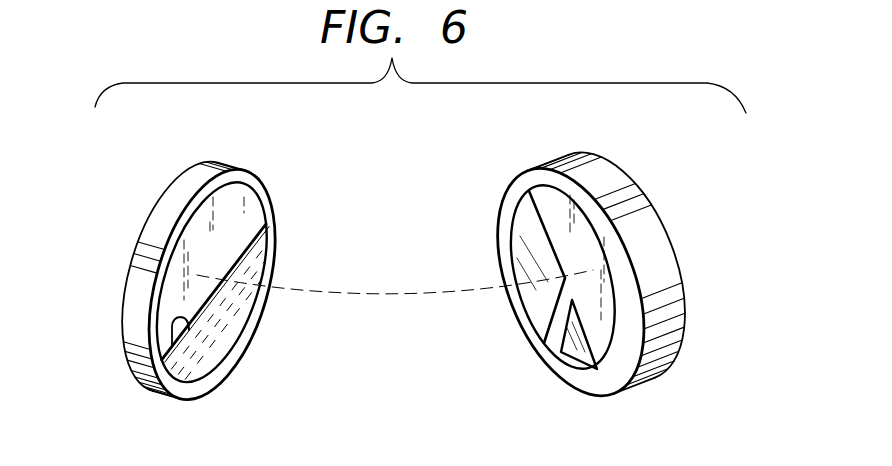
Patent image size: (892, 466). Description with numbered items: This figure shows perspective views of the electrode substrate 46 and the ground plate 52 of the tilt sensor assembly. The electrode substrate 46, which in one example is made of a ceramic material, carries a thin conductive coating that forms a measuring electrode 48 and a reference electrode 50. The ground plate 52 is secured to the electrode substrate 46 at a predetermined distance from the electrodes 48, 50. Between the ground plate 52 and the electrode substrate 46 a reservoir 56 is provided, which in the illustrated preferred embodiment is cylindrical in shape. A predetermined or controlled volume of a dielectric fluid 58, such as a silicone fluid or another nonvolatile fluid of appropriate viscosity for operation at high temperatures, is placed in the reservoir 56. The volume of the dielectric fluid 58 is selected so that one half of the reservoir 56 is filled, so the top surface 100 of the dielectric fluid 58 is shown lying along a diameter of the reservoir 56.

The electrode substrate 46 is at (638, 210).
The measuring electrode 48 is at (506, 243).
The reference electrode 50 is at (566, 359).
The ground plate 52 is at (178, 195).
The reservoir 56 is at (248, 221).
The dielectric fluid 58 is at (233, 320).
The top surface 100 is at (189, 330).